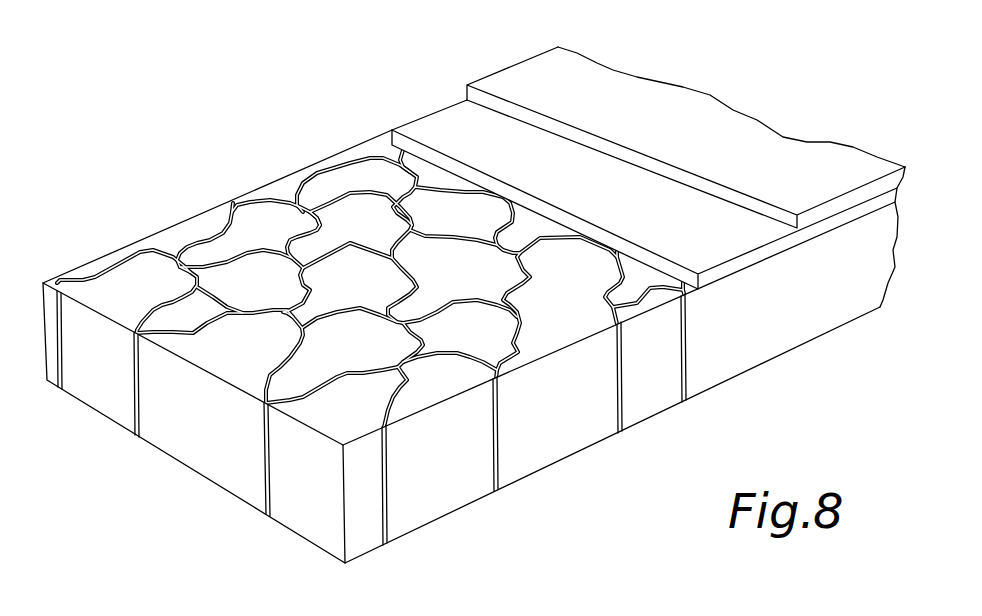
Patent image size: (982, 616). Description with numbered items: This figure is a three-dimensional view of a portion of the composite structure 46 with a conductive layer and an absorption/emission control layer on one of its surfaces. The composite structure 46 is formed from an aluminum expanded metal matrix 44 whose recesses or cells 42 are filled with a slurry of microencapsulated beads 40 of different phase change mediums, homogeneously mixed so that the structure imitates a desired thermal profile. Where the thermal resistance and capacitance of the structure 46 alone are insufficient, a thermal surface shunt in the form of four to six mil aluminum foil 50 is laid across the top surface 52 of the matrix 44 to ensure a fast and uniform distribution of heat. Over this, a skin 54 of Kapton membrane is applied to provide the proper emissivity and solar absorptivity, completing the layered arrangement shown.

The beads 40 is at (432, 392).
The cells 42 is at (262, 372).
The aluminum expanded metal matrix 44 is at (683, 360).
The composite structure 46 is at (536, 449).
The aluminum foil 50 is at (437, 122).
The top surface 52 is at (278, 193).
The skin 54 is at (520, 72).